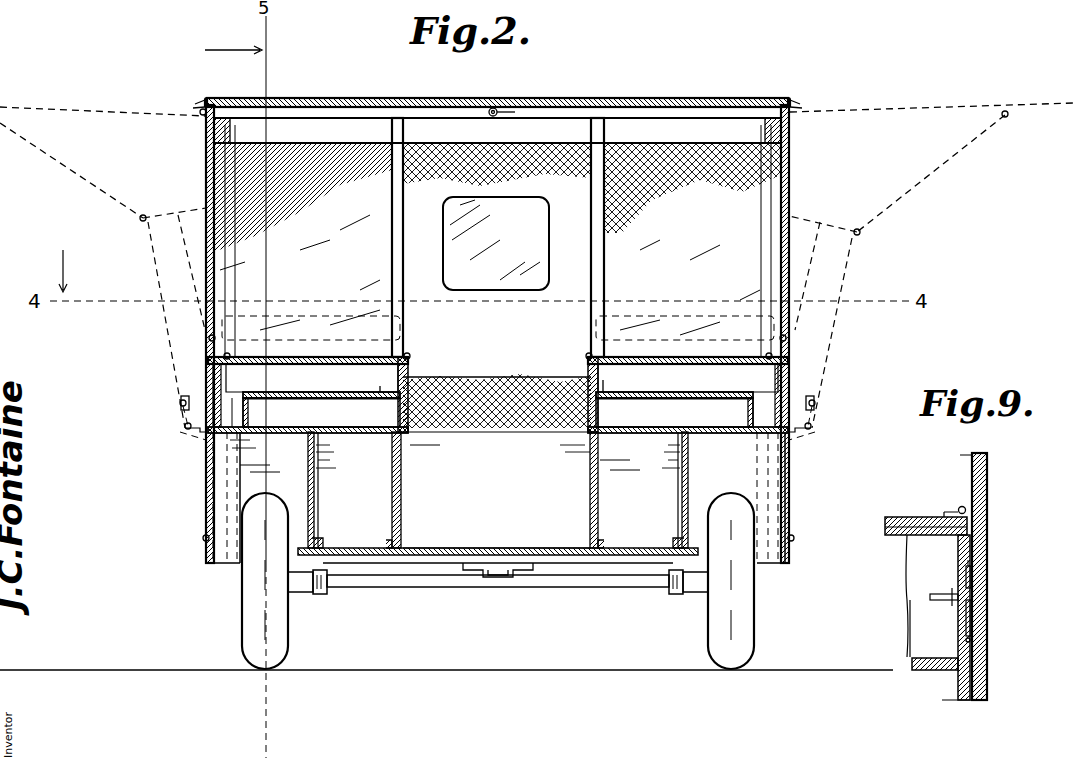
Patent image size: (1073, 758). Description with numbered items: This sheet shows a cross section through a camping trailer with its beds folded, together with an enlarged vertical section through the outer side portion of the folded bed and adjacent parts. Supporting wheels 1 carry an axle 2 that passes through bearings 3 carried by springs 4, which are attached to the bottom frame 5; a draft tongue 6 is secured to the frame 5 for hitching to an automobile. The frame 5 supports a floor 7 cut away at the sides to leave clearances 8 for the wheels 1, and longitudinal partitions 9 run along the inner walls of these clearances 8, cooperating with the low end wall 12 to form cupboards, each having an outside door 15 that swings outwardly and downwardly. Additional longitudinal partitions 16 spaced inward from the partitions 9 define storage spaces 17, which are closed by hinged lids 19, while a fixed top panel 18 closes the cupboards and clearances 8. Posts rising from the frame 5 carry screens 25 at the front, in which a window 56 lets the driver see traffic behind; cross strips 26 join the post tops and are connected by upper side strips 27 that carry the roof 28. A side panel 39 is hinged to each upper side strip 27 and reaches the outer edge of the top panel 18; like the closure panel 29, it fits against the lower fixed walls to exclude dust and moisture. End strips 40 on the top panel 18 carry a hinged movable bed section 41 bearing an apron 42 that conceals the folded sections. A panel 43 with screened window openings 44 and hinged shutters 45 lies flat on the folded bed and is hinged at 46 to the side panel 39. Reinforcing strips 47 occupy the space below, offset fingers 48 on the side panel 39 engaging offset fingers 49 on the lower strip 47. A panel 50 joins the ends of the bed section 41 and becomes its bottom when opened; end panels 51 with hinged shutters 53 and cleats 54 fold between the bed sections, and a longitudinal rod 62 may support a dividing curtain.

In FIG. 2, the supporting wheels 1 is at (258, 626).
In FIG. 2, the axle 2 is at (424, 587).
In FIG. 2, the bearings 3 is at (300, 592).
In FIG. 2, the springs 4 is at (319, 594).
In FIG. 2, the bottom frame 5 is at (598, 566).
In FIG. 2, the draft tongue 6 is at (500, 577).
In FIG. 2, the floor 7 is at (480, 540).
In FIG. 2, the clearances 8 is at (240, 480).
In FIG. 2, the longitudinal partitions 9 is at (320, 505).
In FIG. 2, the low end wall 12 is at (506, 491).
In FIG. 2, the outside door 15 is at (208, 512).
In FIG. 2, the additional longitudinal partitions 16 is at (392, 472).
In FIG. 2, the storage spaces 17 is at (348, 465).
In FIG. 2, the top panel 18 is at (257, 434).
In FIG. 9, the top panel 18 is at (930, 670).
In FIG. 2, the hinged lids 19 is at (392, 432).
In FIG. 2, the screens 25 is at (207, 168).
In FIG. 2, the cross strips 26 is at (314, 132).
In FIG. 2, the upper side strips 27 is at (231, 126).
In FIG. 2, the roof 28 is at (585, 98).
In FIG. 2, the panel 29 is at (426, 258).
In FIG. 2, the side panel 39 is at (88, 112).
In FIG. 9, the side panel 39 is at (987, 472).
In FIG. 2, the end strips 40 is at (438, 412).
In FIG. 9, the end strips 40 is at (908, 643).
In FIG. 2, the movable bed section 41 is at (170, 258).
In FIG. 9, the movable bed section 41 is at (905, 557).
In FIG. 2, the apron 42 is at (143, 214).
In FIG. 2, the panel 43 is at (66, 172).
In FIG. 2, the screened window openings 44 is at (342, 397).
In FIG. 2, the hinged shutters 45 is at (300, 357).
In FIG. 2, the hinge connection 46 is at (206, 338).
In FIG. 9, the hinge connection 46 is at (958, 506).
In FIG. 2, the reinforcing strips 47 is at (205, 430).
In FIG. 9, the reinforcing strips 47 is at (930, 615).
In FIG. 2, the offset fingers 48 is at (181, 396).
In FIG. 9, the offset fingers 48 is at (970, 580).
In FIG. 2, the offset fingers 49 is at (185, 426).
In FIG. 9, the offset fingers 49 is at (972, 625).
In FIG. 2, the panel 50 is at (160, 296).
In FIG. 2, the end panels 51 is at (502, 378).
In FIG. 2, the hinged shutter 53 is at (333, 399).
In FIG. 2, the cleats 54 is at (250, 410).
In FIG. 2, the window 56 is at (540, 265).
In FIG. 2, the longitudinal rod 62 is at (496, 108).